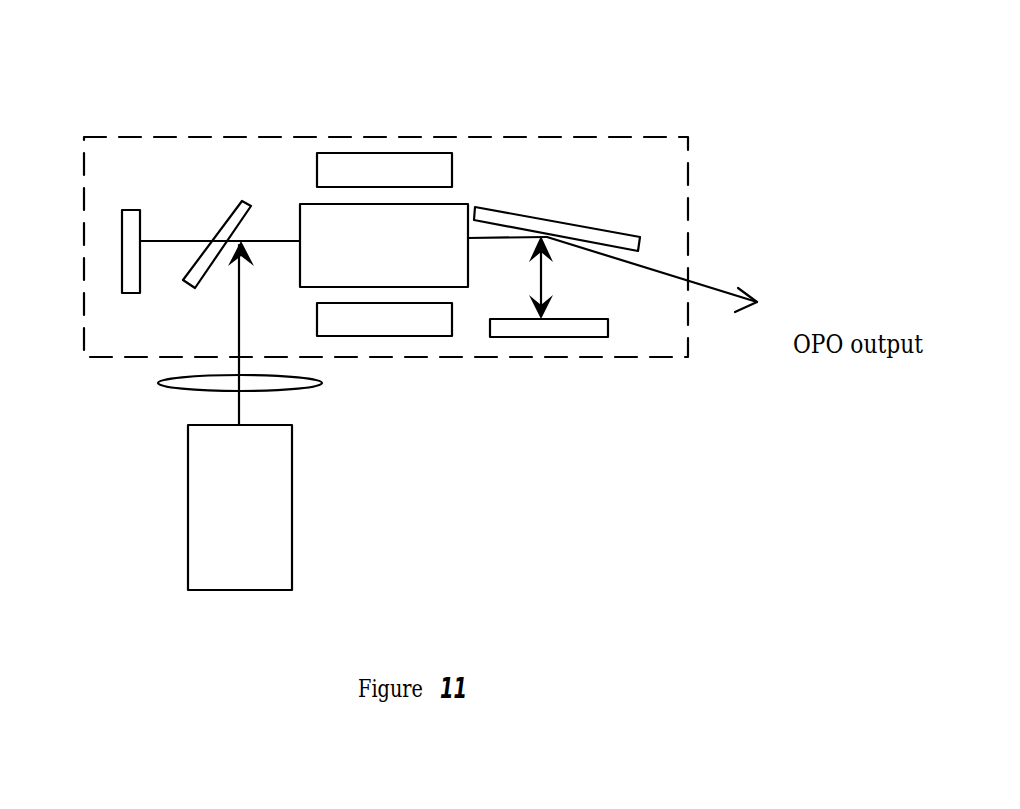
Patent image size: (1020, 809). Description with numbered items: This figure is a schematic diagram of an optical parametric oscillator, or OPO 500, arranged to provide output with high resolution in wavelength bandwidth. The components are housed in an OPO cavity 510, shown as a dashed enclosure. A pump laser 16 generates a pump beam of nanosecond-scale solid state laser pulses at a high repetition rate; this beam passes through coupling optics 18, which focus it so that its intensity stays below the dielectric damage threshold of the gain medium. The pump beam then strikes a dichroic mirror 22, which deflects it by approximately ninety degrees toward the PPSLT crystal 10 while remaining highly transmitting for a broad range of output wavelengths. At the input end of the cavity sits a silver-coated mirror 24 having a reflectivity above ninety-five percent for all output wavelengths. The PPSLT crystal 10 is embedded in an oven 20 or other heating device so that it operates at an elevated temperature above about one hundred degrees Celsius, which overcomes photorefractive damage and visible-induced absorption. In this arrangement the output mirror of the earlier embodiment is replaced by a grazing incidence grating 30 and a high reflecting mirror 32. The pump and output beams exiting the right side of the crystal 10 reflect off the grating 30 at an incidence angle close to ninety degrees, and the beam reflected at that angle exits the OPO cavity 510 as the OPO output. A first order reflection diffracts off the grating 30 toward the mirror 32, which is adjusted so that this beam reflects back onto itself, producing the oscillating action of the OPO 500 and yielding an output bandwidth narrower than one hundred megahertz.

The OPO 500 is at (416, 78).
The OPO cavity 510 is at (587, 137).
The mirror 24 is at (120, 245).
The dichroic mirror 22 is at (247, 213).
The PPSLT crystal 10 is at (450, 275).
The oven 20 is at (447, 170).
The grazing incidence grating 30 is at (623, 240).
The high reflecting mirror 32 is at (582, 337).
The coupling optics 18 is at (322, 383).
The pump laser 16 is at (292, 503).